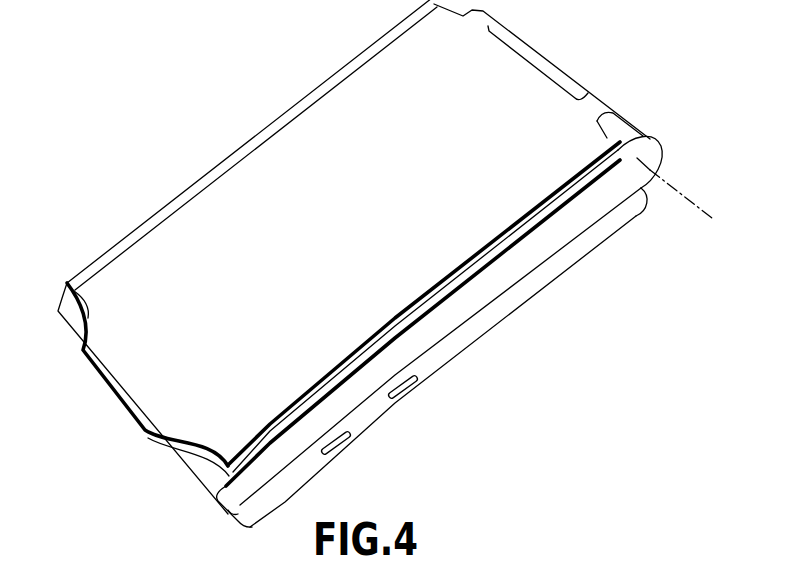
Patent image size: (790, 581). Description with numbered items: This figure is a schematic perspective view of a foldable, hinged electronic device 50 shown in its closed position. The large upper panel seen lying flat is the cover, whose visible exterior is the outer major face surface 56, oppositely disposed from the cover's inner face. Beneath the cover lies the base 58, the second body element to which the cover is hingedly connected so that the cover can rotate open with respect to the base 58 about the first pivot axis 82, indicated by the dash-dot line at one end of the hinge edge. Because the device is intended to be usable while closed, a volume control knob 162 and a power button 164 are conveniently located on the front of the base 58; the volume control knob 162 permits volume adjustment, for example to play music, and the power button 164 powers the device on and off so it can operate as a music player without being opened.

The electronic device 50 is at (385, 263).
The outer major face surface 56 is at (228, 207).
The base 58 is at (440, 331).
The first pivot axis 82 is at (698, 208).
The volume control knob 162 is at (410, 390).
The power button 164 is at (337, 450).